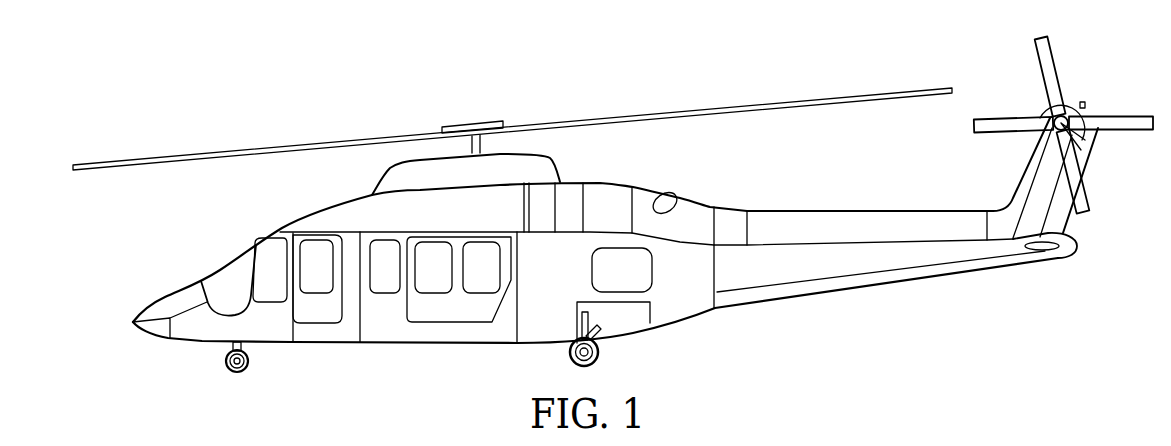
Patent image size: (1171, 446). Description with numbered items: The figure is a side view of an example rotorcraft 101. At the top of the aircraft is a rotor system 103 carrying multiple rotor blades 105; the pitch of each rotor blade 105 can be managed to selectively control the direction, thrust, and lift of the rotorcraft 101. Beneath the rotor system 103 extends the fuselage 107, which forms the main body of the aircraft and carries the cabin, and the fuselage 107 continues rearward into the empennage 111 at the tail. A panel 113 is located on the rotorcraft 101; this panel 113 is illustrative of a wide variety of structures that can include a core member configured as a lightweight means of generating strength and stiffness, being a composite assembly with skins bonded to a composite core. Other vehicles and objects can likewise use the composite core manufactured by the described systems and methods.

The rotorcraft 101 is at (312, 71).
The rotor system 103 is at (482, 100).
The rotor blades 105 is at (185, 155).
The fuselage 107 is at (378, 343).
The empennage 111 is at (874, 288).
The panel 113 is at (665, 282).